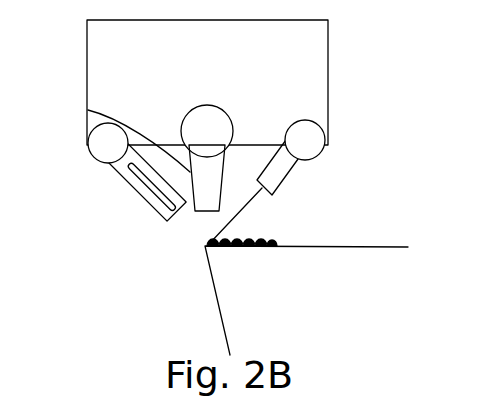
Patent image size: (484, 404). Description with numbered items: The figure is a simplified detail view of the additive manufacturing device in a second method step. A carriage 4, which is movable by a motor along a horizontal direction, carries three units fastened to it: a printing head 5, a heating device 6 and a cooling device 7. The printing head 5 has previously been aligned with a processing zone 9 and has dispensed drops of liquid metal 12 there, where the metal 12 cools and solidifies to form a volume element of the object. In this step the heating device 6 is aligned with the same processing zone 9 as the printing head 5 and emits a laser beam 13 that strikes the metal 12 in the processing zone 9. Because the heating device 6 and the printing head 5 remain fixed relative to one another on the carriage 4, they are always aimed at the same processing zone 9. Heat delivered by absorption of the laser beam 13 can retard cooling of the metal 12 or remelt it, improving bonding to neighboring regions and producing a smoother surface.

The carriage 4 is at (196, 86).
The printing head 5 is at (88, 110).
The heating device 6 is at (283, 182).
The cooling device 7 is at (138, 190).
The processing zone 9 is at (196, 248).
The metal 12 is at (251, 258).
The laser beam 13 is at (240, 213).